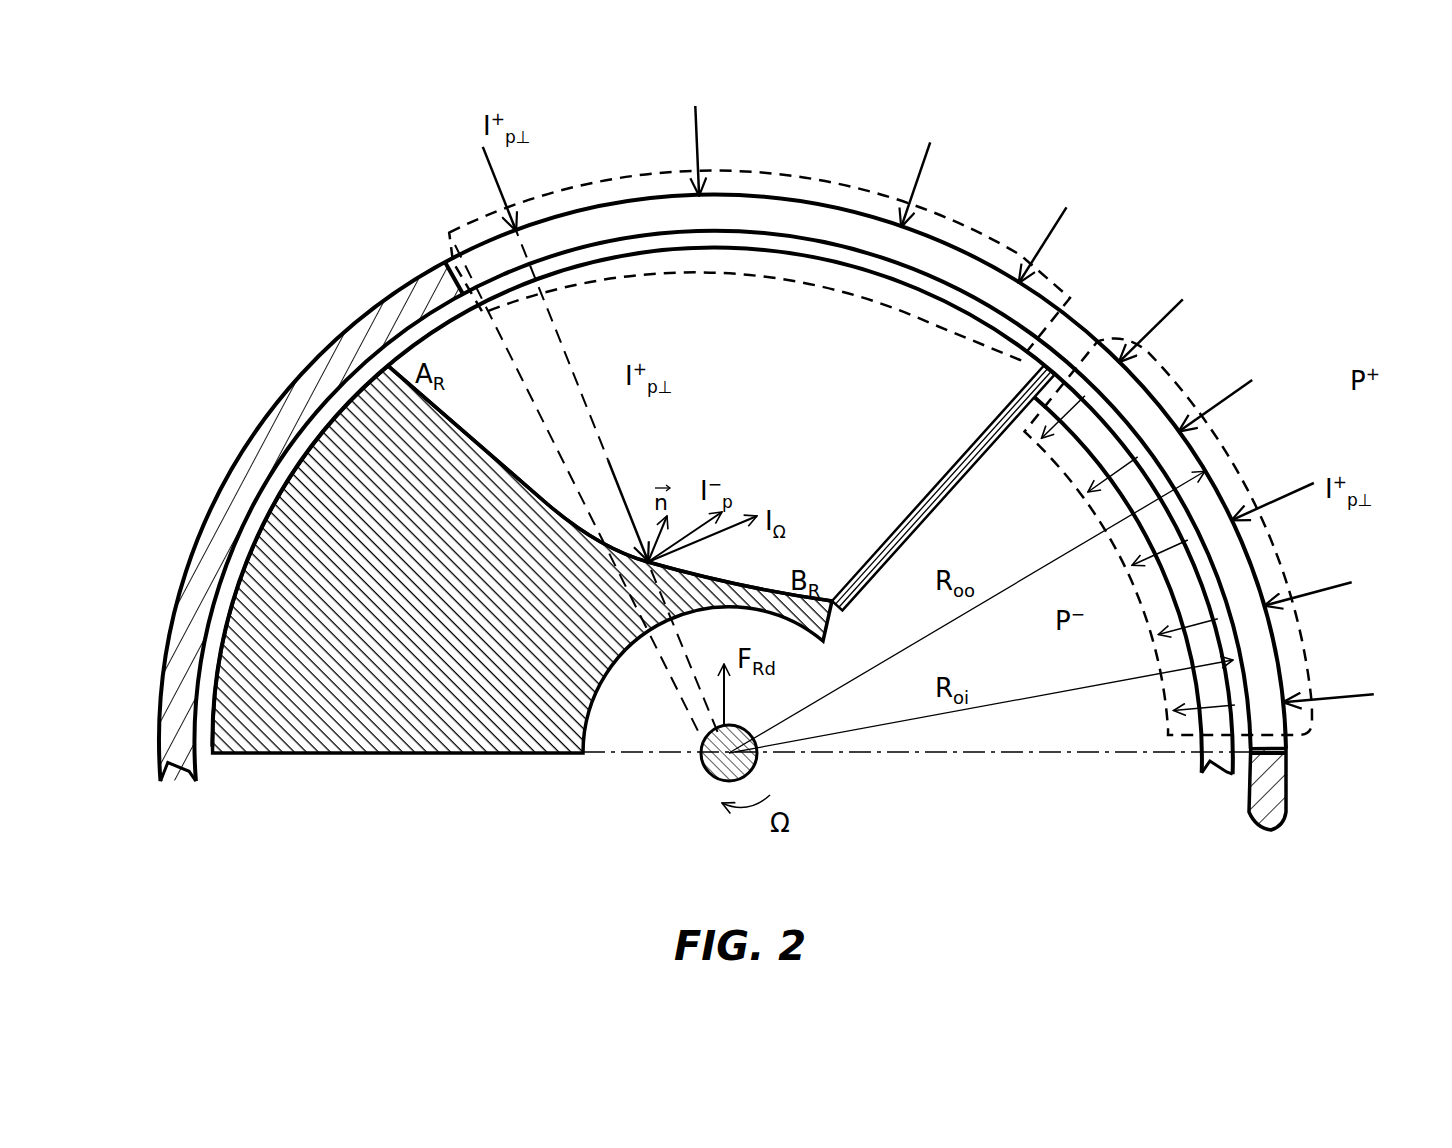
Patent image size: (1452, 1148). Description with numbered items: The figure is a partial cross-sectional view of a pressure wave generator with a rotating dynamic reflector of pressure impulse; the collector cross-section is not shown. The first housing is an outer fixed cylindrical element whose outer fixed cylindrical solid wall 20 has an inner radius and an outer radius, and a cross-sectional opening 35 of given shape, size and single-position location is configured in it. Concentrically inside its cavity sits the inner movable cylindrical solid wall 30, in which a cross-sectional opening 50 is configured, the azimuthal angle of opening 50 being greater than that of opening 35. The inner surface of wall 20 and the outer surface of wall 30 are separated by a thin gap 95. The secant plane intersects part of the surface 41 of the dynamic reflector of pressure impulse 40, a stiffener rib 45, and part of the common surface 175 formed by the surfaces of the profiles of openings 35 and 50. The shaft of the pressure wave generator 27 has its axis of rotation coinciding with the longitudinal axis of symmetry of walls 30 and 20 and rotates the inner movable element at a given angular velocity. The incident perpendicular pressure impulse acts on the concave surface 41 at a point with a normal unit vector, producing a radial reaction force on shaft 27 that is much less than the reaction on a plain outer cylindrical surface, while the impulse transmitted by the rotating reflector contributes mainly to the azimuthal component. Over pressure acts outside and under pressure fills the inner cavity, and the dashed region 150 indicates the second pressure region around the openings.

The outer fixed cylindrical solid wall 20 is at (1267, 781).
The shaft of the pressure wave generator 27 is at (722, 760).
The inner movable cylindrical solid wall 30 is at (283, 497).
The cross-sectional opening 35 is at (1062, 335).
The dynamic reflector of pressure impulse 40 is at (383, 450).
The surface of dynamic reflector of pressure impulse 41 is at (497, 465).
The stiffener rib 45 is at (913, 500).
The cross-sectional opening 50 is at (1093, 437).
The thin gap 95 is at (797, 244).
The second pressure region 150 is at (1306, 644).
The common surface 175 is at (535, 192).